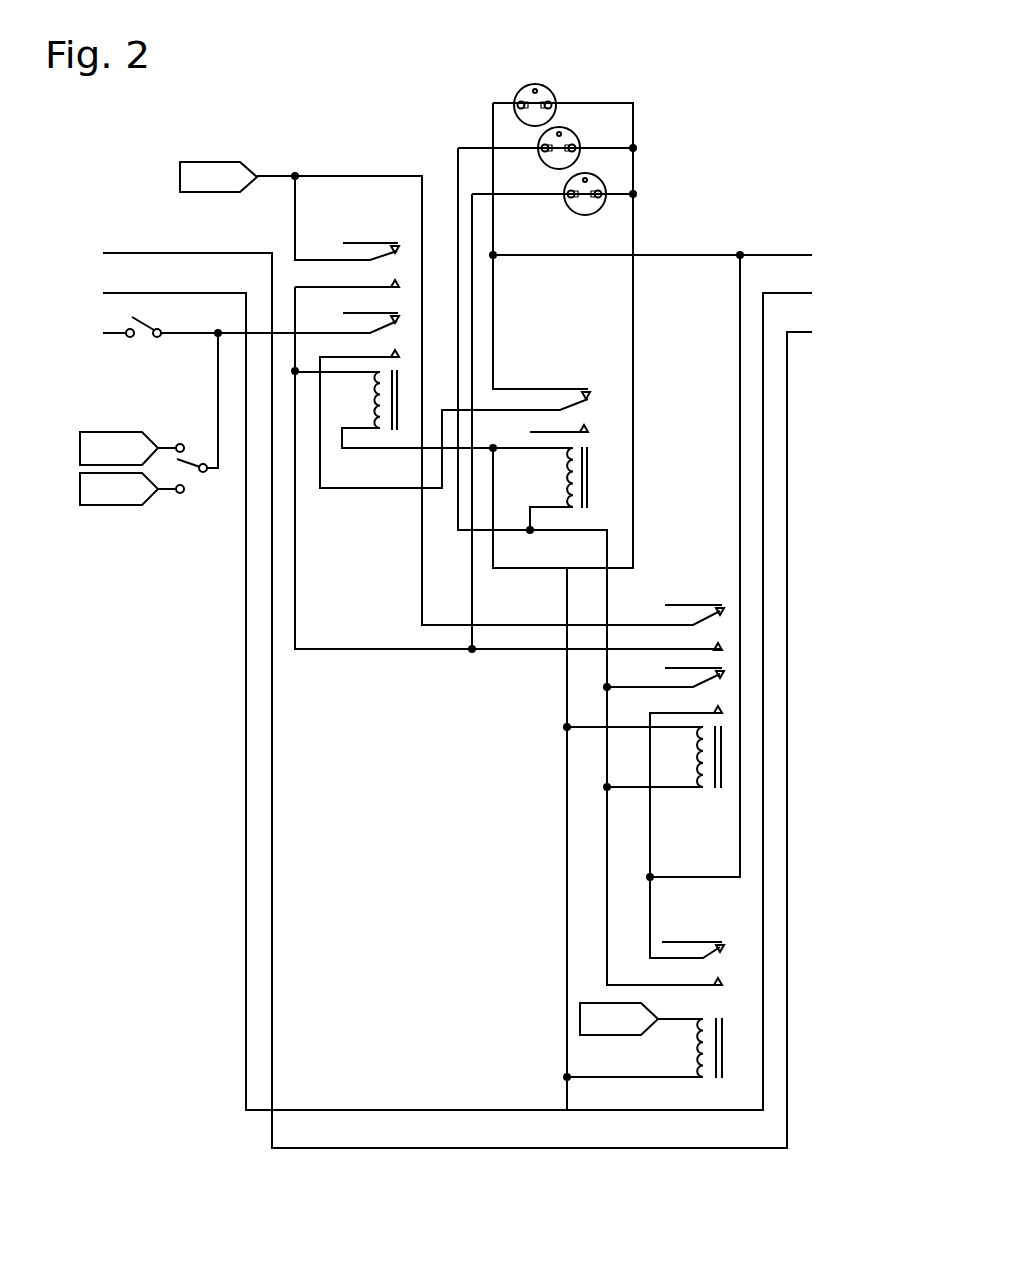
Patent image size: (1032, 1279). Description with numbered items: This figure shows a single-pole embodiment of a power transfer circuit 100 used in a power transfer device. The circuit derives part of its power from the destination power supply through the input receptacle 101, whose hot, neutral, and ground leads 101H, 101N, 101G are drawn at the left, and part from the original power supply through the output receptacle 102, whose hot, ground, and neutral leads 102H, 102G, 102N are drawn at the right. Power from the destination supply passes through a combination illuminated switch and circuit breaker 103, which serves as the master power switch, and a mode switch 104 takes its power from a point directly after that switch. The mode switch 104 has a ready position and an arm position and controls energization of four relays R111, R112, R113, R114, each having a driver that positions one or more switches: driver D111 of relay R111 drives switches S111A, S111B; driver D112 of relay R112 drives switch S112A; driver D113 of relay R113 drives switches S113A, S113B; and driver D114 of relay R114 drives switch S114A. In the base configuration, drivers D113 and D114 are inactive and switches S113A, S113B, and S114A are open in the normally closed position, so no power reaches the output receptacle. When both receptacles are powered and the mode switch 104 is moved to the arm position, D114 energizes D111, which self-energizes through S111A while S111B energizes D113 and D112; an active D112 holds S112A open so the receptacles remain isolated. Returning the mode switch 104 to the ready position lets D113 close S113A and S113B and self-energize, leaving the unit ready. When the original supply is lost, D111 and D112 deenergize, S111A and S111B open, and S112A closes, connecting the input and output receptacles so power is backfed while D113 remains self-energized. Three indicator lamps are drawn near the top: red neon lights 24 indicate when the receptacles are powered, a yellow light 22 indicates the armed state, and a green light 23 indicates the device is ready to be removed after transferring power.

The power transfer circuit 100 is at (786, 82).
The input receptacle 101 is at (72, 231).
The neutral lead of the destination power supply 101N is at (87, 255).
The ground lead of the destination power supply 101G is at (87, 295).
The hot lead of the destination power supply 101H is at (85, 335).
The output receptacle 102 is at (835, 231).
The hot lead of the original power supply 102H is at (828, 257).
The ground lead of the original power supply 102G is at (828, 295).
The neutral lead of the original power supply 102N is at (828, 335).
The combination illuminated switch and circuit breaker 103 is at (137, 346).
The mode switch 104 is at (197, 491).
The yellow light 22 is at (560, 127).
The green light 23 is at (588, 173).
The red neon lights 24 is at (532, 84).
The relay R111 is at (690, 585).
The relay switch S111A is at (680, 691).
The relay switch S111B is at (680, 628).
The relay driver D111 is at (688, 757).
The relay R112 is at (563, 379).
The first switch S112A is at (543, 414).
The switch driver D112 is at (543, 477).
The relay R113 is at (346, 229).
The relay switch S113A is at (353, 336).
The relay switch S113B is at (353, 266).
The switch driver D113 is at (361, 400).
The relay R114 is at (689, 933).
The relay switch S114A is at (678, 965).
The switch driver D114 is at (678, 1048).